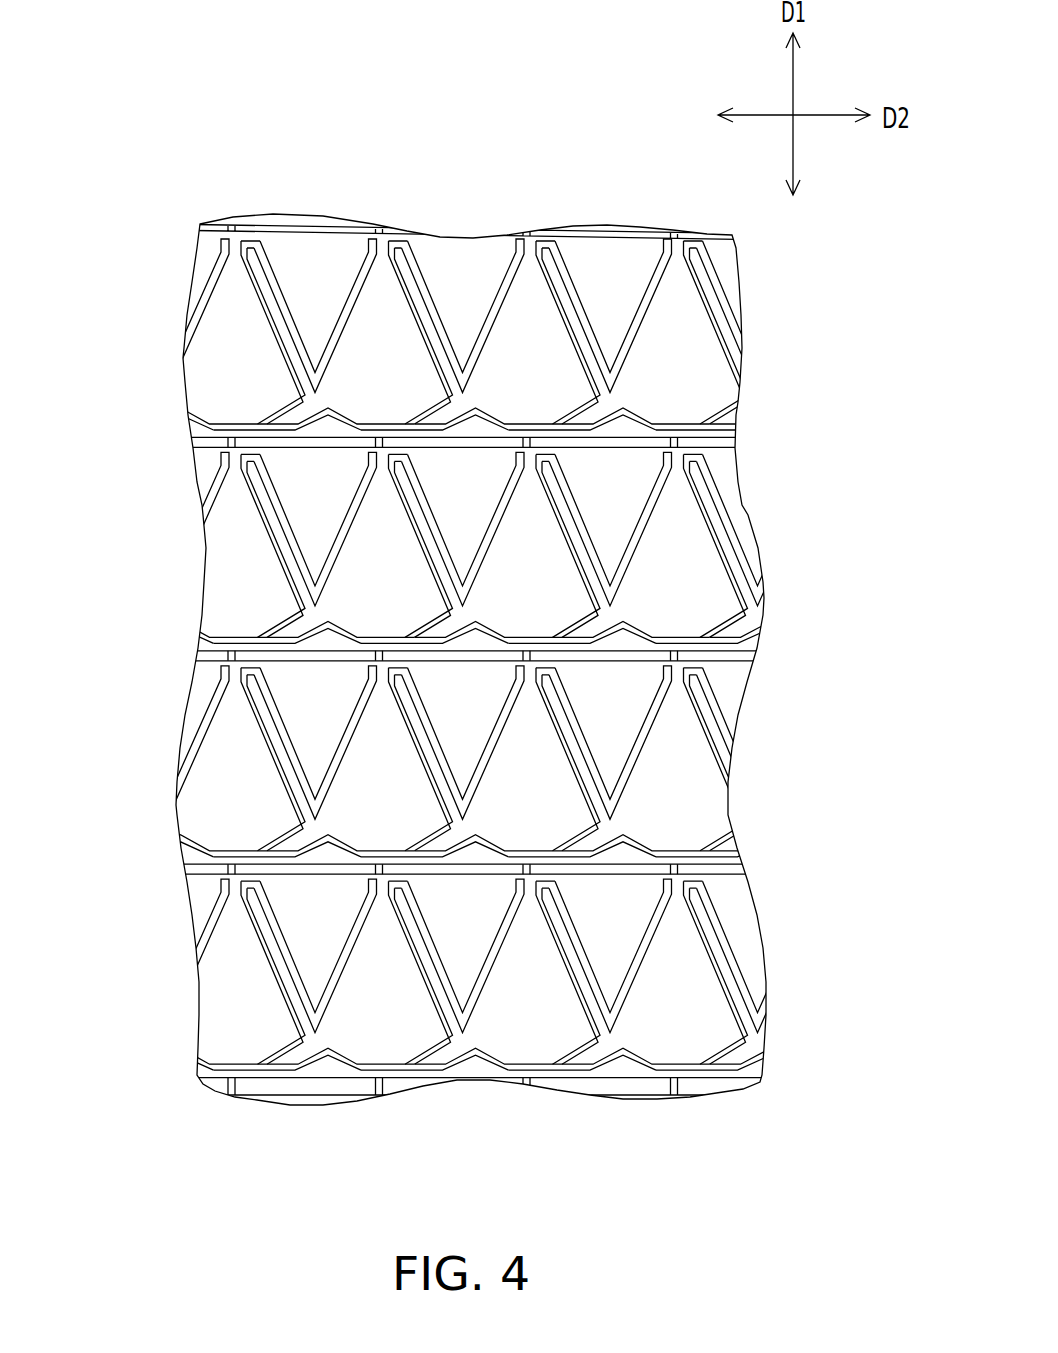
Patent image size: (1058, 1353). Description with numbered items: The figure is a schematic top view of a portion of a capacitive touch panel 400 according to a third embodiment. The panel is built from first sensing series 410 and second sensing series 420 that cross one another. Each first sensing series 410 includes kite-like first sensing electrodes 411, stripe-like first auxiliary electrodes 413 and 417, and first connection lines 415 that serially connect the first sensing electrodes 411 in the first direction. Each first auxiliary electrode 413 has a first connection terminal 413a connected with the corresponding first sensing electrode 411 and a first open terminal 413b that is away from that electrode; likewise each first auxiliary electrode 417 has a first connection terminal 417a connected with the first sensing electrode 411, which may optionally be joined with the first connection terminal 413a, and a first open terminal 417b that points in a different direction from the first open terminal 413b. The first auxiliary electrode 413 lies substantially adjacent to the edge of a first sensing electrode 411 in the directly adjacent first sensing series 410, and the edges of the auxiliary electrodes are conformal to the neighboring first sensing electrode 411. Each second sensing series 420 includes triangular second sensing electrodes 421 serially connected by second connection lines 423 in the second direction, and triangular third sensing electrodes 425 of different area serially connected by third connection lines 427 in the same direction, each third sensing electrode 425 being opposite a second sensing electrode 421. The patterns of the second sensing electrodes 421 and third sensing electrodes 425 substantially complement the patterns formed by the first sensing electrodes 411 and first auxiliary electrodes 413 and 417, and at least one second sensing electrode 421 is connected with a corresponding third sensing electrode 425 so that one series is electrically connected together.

The capacitive touch panel 400 is at (880, 1183).
The first sensing series 410 is at (855, 680).
The first sensing electrode 411 is at (678, 797).
The first auxiliary electrode 413 is at (565, 730).
The first connection terminal 413a is at (607, 380).
The first open terminal 413b is at (548, 262).
The first connection line 415 is at (700, 653).
The first auxiliary electrode 417 is at (598, 846).
The first connection terminal 417a is at (468, 1047).
The first open terminal 417b is at (440, 1057).
The second sensing series 420 is at (85, 425).
The second sensing electrode 421 is at (300, 490).
The second connection line 423 is at (240, 448).
The third sensing electrode 425 is at (290, 578).
The third connection line 427 is at (237, 648).